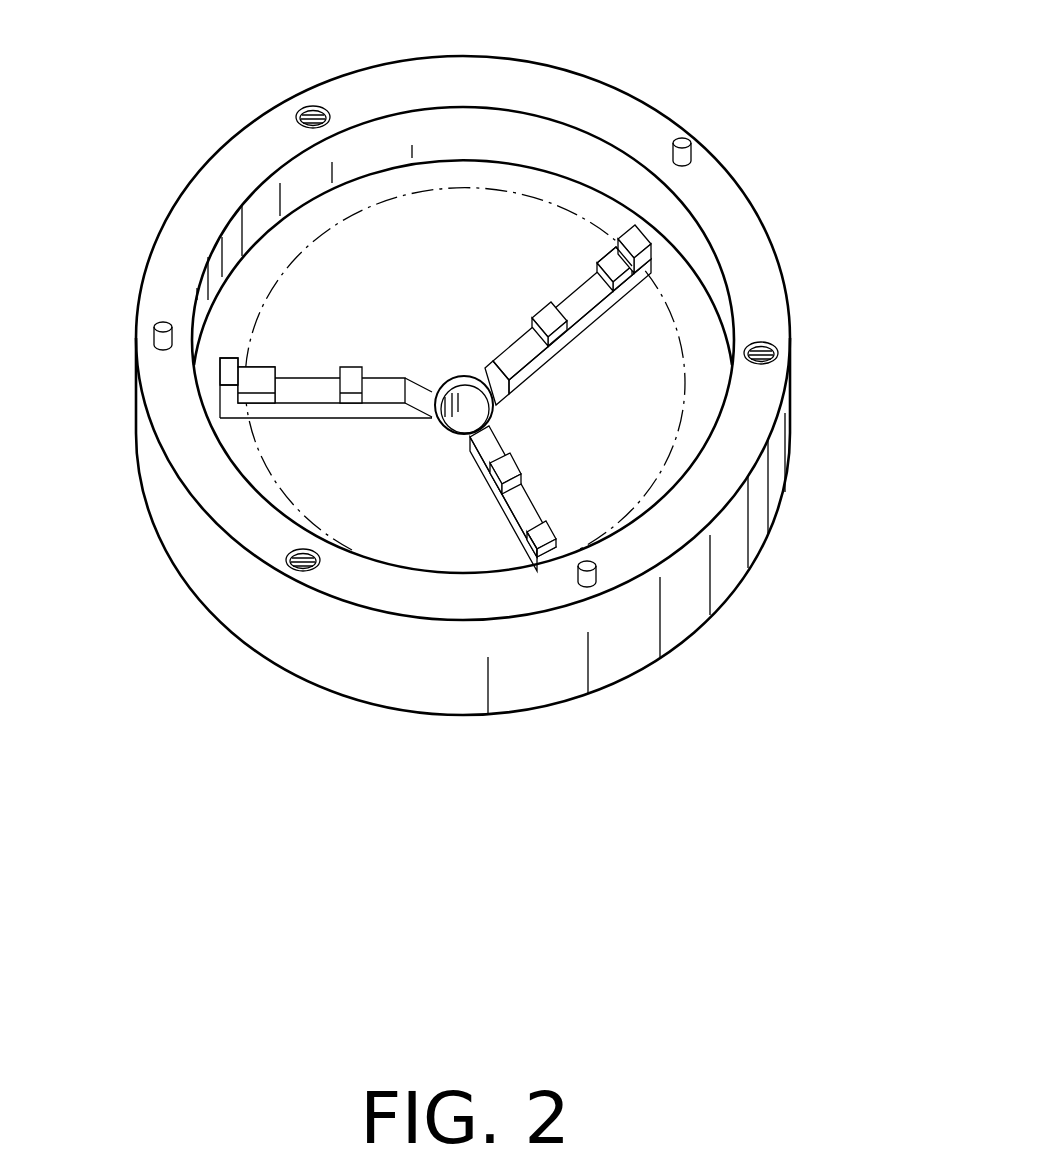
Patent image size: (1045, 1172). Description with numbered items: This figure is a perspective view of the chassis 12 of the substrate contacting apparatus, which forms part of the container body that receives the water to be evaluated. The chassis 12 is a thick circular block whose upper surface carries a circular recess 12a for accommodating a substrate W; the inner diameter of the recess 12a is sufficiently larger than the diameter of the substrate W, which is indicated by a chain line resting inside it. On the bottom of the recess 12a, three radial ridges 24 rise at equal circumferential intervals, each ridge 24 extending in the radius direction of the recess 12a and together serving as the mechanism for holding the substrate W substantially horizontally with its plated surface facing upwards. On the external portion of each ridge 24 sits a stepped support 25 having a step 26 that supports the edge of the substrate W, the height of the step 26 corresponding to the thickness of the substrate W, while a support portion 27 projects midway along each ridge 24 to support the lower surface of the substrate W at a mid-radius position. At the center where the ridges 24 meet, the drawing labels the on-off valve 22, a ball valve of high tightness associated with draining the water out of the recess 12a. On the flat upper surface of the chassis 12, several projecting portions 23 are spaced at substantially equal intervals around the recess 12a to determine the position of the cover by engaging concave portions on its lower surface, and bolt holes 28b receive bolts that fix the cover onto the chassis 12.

The chassis 12 is at (304, 648).
The circular recess 12a is at (547, 432).
The substrate W is at (383, 205).
The on-off valve 22 is at (470, 393).
The projecting portion 23 is at (683, 140).
The radial ridge 24 is at (592, 335).
The stepped support 25 is at (656, 244).
The step 26 is at (586, 235).
The support portion 27 is at (550, 312).
The bolt hole 28b is at (313, 107).